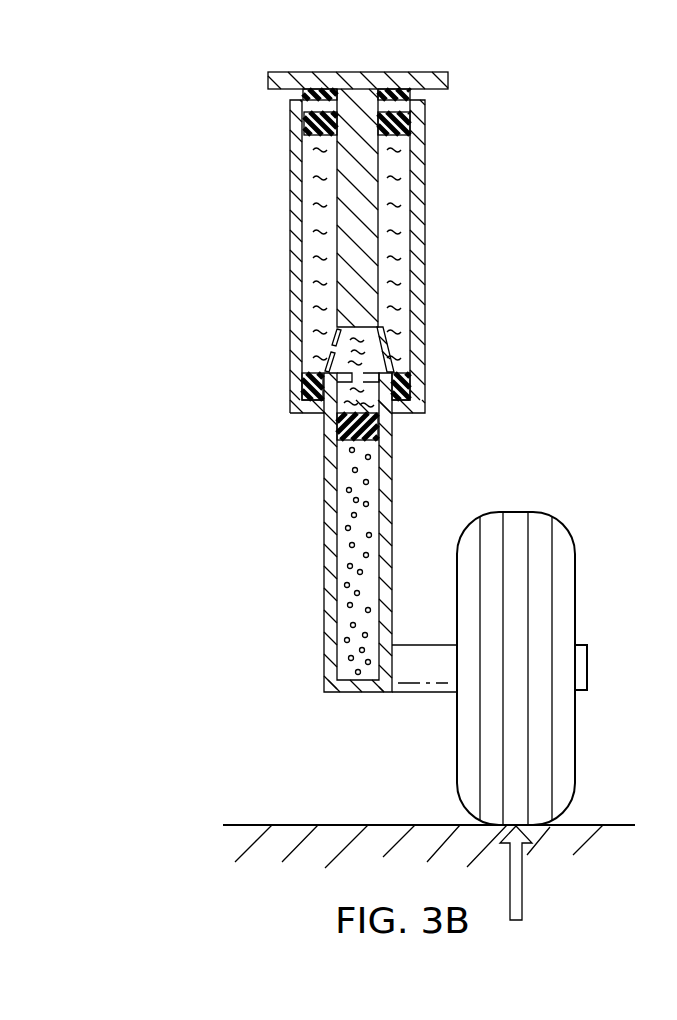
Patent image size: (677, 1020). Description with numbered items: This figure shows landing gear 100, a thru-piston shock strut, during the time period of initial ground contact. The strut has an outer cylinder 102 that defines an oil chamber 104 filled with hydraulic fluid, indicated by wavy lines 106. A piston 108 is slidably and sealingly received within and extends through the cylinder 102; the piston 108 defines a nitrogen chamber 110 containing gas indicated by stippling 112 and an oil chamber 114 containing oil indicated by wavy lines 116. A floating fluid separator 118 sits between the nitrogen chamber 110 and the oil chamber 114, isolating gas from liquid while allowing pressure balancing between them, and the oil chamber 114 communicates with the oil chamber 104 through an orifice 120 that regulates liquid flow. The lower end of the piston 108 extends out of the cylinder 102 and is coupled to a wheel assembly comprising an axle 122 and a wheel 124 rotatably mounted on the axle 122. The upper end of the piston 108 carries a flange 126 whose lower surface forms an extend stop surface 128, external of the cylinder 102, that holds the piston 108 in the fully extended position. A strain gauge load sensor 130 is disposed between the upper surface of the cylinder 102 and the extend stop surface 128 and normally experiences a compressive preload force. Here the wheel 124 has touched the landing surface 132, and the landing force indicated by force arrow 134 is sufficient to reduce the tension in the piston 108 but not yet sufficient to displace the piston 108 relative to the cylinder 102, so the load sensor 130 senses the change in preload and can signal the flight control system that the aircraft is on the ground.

The landing gear 100 is at (531, 134).
The outer cylinder 102 is at (417, 173).
The oil chamber 104 is at (402, 212).
The wavy lines 106 is at (388, 250).
The piston 108 is at (350, 270).
The nitrogen chamber 110 is at (337, 540).
The stippling 112 is at (345, 588).
The oil chamber 114 is at (372, 397).
The wavy lines 116 is at (360, 405).
The fluid separator 118 is at (357, 443).
The orifice 120 is at (343, 373).
The axle 122 is at (422, 693).
The wheel 124 is at (575, 727).
The flange 126 is at (403, 71).
The extend stop surface 128 is at (277, 93).
The strain gauge load sensor 130 is at (410, 95).
The landing surface 132 is at (338, 825).
The force arrow 134 is at (522, 880).